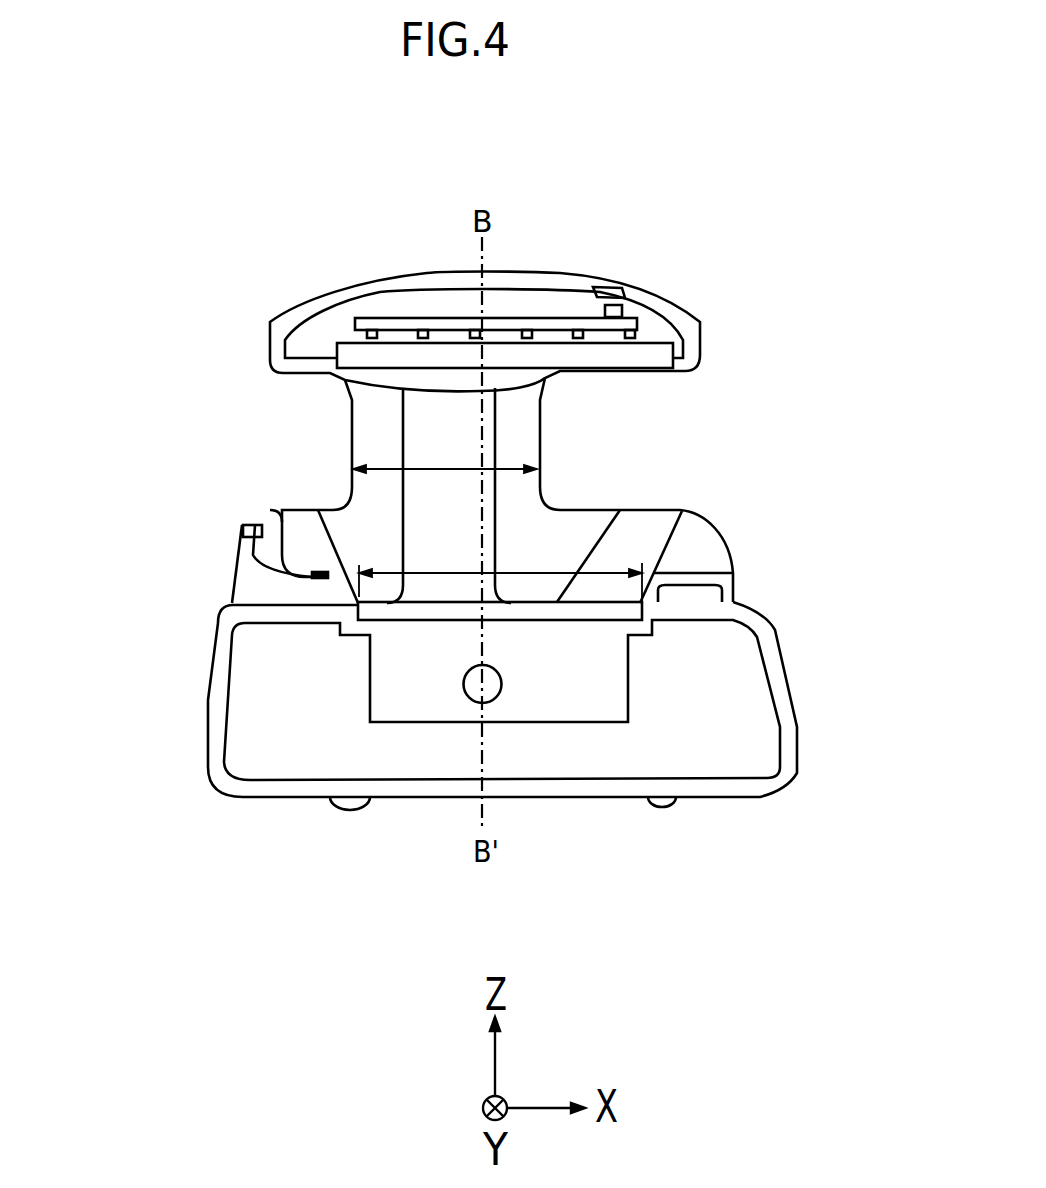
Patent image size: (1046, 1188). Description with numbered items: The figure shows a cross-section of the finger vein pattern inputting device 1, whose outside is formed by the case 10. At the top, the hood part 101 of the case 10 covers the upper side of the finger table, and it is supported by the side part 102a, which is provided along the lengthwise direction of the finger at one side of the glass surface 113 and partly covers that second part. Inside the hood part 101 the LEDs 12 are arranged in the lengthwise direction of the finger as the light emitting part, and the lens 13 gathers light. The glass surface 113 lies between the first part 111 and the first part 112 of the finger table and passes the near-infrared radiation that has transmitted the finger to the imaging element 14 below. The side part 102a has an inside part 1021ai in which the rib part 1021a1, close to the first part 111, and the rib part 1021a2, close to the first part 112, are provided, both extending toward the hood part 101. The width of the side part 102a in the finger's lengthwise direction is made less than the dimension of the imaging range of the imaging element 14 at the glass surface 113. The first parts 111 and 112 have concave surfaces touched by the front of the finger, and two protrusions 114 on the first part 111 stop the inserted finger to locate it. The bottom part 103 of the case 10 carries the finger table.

The finger vein pattern inputting device 1 is at (872, 131).
The case 10 is at (413, 273).
The LED 12 is at (523, 330).
The lens 13 is at (577, 355).
The imaging element 14 is at (485, 702).
The hood part 101 is at (268, 340).
The side part 102a is at (548, 474).
The rib part 1021a1 is at (377, 445).
The rib part 1021a2 is at (520, 452).
The inside part 1021ai is at (448, 543).
The bottom part 103 is at (207, 718).
The first part 111 is at (258, 508).
The first part 112 is at (690, 563).
The glass surface 113 is at (618, 510).
The protrusion 114 is at (328, 575).